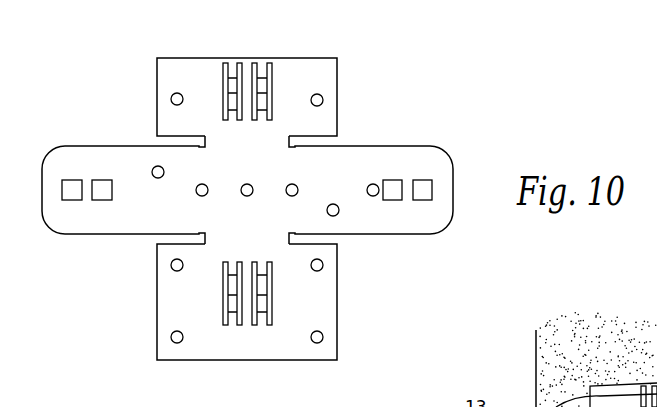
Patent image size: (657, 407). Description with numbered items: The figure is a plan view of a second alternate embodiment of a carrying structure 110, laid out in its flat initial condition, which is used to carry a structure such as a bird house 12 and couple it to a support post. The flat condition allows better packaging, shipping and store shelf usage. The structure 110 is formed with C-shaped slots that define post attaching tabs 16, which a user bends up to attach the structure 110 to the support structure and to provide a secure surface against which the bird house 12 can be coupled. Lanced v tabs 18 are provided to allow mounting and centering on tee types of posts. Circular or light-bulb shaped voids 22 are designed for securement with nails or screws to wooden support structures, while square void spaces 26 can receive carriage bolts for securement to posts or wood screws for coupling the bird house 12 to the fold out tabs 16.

The carrying structure 110 is at (77, 117).
The bird house 12 is at (327, 310).
The post attaching tabs 16 is at (133, 162).
The lanced v tabs 18 is at (268, 82).
The circular or light-bulb shaped voids 22 is at (177, 337).
The square void spaces 26 is at (77, 192).